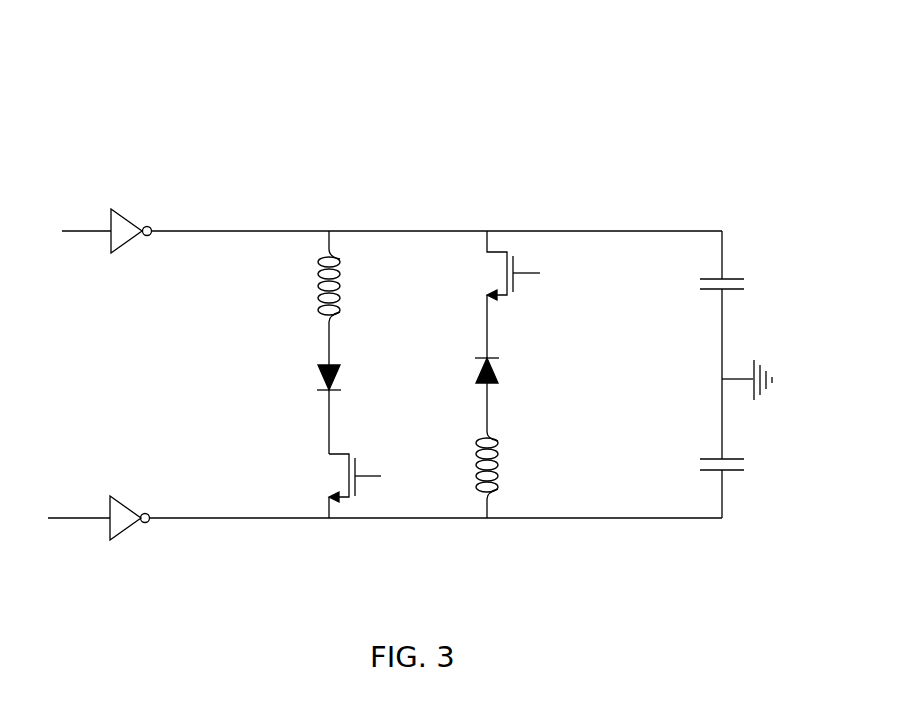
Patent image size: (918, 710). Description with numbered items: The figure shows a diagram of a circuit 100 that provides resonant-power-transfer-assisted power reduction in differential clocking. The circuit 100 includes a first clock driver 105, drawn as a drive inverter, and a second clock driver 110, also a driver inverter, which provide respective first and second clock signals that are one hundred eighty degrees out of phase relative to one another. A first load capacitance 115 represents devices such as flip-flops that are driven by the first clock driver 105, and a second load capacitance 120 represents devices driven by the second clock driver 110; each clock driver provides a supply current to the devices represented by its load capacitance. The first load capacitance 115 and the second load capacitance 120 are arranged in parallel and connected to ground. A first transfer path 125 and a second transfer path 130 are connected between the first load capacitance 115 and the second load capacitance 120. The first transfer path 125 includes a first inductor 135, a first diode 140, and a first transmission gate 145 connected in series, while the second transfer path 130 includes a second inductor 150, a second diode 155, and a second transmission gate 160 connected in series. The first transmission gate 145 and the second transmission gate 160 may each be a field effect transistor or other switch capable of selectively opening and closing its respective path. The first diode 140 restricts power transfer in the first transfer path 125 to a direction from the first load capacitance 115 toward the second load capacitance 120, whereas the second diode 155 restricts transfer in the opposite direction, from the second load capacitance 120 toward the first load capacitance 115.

The circuit 100 is at (100, 92).
The first clock driver 105 is at (109, 209).
The second clock driver 110 is at (109, 499).
The first load capacitance 115 is at (740, 267).
The second load capacitance 120 is at (745, 476).
The first transfer path 125 is at (232, 364).
The second transfer path 130 is at (605, 328).
The first inductor 135 is at (308, 278).
The first diode 140 is at (346, 371).
The first transmission gate 145 is at (319, 470).
The second inductor 150 is at (506, 468).
The second diode 155 is at (506, 361).
The second transmission gate 160 is at (480, 278).